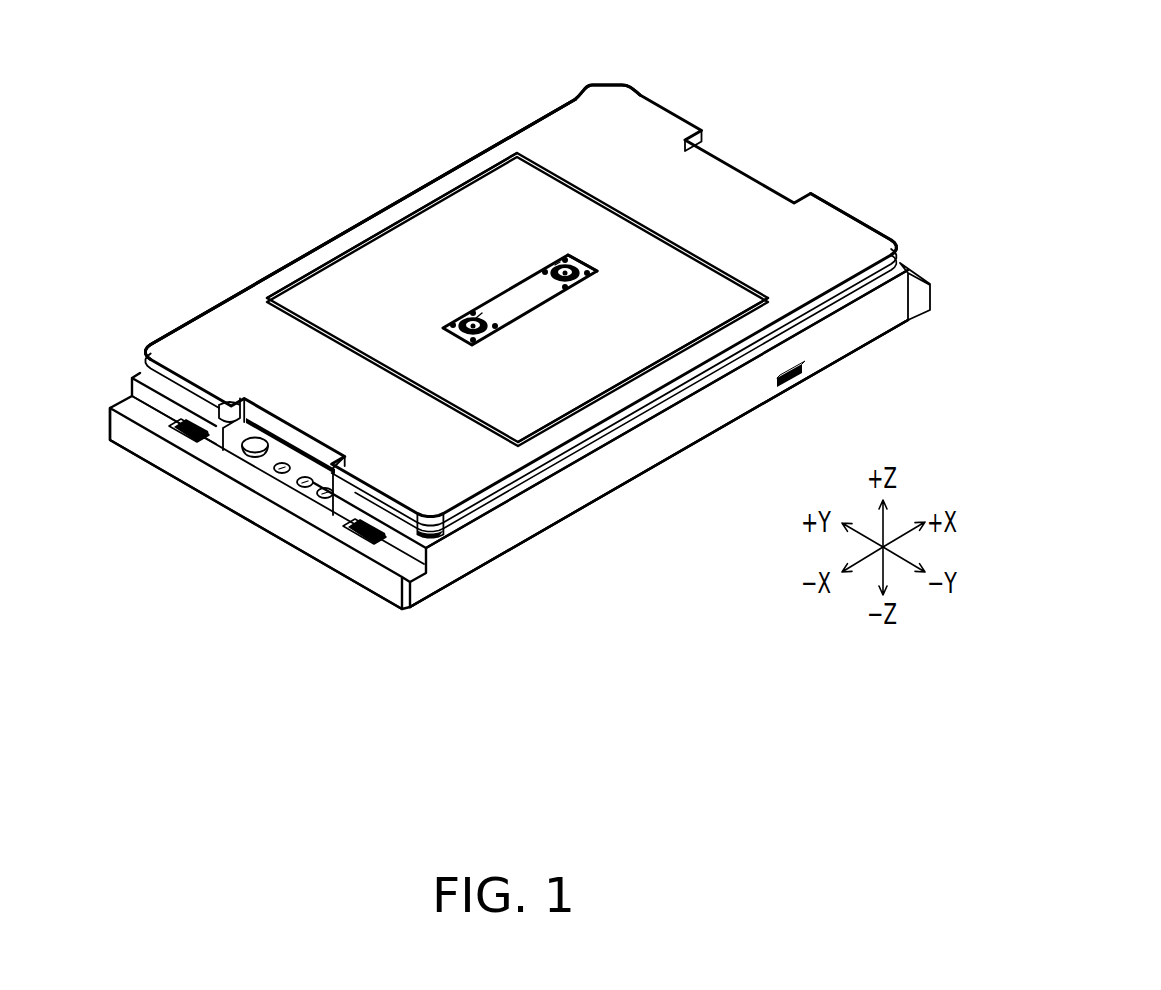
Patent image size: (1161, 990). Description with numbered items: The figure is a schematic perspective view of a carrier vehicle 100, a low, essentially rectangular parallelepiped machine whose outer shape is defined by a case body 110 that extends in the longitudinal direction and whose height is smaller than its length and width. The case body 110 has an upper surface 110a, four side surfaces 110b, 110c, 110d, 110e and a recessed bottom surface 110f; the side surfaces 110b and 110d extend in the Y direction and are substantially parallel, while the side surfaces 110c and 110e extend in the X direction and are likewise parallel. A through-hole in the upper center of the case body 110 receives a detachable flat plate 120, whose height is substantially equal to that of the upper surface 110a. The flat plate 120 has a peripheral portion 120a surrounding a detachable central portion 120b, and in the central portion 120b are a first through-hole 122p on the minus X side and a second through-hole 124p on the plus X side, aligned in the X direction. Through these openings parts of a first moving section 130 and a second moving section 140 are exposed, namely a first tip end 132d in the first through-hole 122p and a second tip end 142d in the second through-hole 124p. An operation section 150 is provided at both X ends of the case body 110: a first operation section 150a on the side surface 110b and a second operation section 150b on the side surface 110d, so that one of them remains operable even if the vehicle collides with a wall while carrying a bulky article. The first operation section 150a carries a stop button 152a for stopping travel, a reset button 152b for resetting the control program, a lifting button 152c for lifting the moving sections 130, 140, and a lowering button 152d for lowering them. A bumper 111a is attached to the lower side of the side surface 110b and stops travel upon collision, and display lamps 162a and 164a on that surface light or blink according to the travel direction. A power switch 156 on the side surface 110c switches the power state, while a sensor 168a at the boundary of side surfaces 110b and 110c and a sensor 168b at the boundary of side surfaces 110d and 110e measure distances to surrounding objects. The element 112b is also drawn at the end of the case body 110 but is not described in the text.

The carrier vehicle 100 is at (808, 98).
The case body 110 is at (515, 335).
The upper surface 110a is at (257, 330).
The side surface 110b is at (132, 396).
The side surface 110c is at (732, 405).
The side surface 110d is at (893, 247).
The side surface 110e is at (558, 108).
The bottom surface 110f is at (578, 527).
The bumper 111a is at (133, 440).
The side protrusion 112b is at (917, 310).
The flat plate 120 is at (522, 337).
The peripheral portion 120a is at (513, 398).
The central portion 120b is at (518, 308).
The first through-hole 122p is at (482, 313).
The second through-hole 124p is at (555, 265).
The first moving section 130 is at (466, 300).
The first tip end 132d is at (464, 323).
The second moving section 140 is at (615, 265).
The second tip end 142d is at (563, 262).
The operation section 150 is at (479, 394).
The first operation section 150a is at (276, 646).
The second operation section 150b is at (787, 167).
The stop button 152a is at (240, 462).
The reset button 152b is at (262, 480).
The lifting button 152c is at (290, 492).
The lowering button 152d is at (304, 510).
The power switch 156 is at (803, 373).
The display lamp 162a is at (192, 432).
The display lamp 164a is at (362, 532).
The sensor 168a is at (425, 530).
The sensor 168b is at (622, 84).